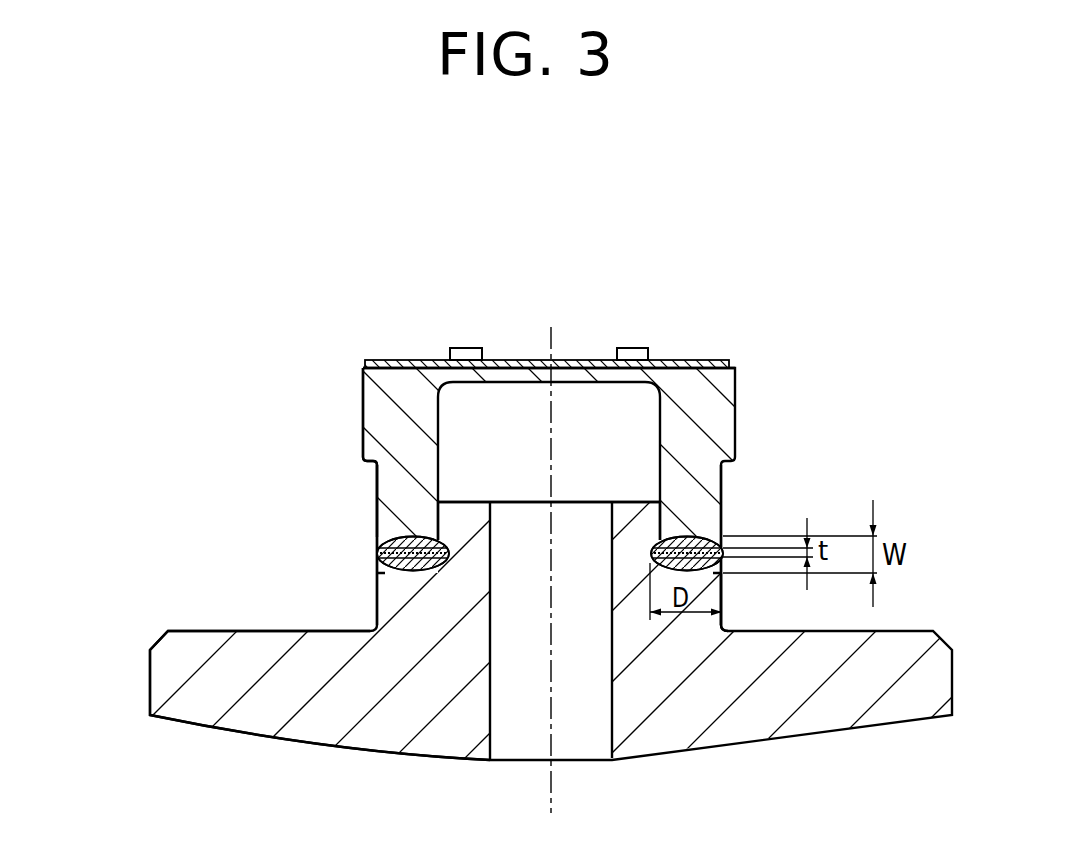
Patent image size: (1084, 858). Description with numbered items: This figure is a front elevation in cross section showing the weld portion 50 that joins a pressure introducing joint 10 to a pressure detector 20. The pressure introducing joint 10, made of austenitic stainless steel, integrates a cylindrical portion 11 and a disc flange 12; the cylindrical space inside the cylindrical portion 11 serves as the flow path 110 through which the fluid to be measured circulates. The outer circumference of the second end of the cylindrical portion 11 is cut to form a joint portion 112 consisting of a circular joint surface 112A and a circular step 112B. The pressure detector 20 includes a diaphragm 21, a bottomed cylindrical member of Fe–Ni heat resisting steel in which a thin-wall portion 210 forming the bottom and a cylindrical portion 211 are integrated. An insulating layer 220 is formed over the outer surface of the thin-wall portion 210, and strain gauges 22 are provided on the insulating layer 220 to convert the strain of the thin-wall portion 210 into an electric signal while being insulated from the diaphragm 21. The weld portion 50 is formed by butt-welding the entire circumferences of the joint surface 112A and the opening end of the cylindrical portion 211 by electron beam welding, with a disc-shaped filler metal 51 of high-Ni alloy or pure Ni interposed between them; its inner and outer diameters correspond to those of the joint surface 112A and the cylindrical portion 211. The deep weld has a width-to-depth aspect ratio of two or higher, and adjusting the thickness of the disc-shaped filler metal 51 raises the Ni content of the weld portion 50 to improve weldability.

The pressure introducing joint 10 is at (574, 647).
The cylindrical portion 11 is at (632, 605).
The disc flange 12 is at (237, 675).
The flow path 110 is at (493, 712).
The joint portion 112 is at (449, 535).
The joint surface 112A is at (433, 598).
The step 112B is at (423, 510).
The pressure detector 20 is at (575, 370).
The diaphragm 21 is at (556, 425).
The thin-wall portion 210 is at (430, 362).
The cylindrical portion 211 is at (403, 443).
The insulating layer 220 is at (517, 360).
The strain gauge 22 is at (462, 348).
The weld portion 50 is at (467, 510).
The disc-shaped filler metal 51 is at (397, 538).